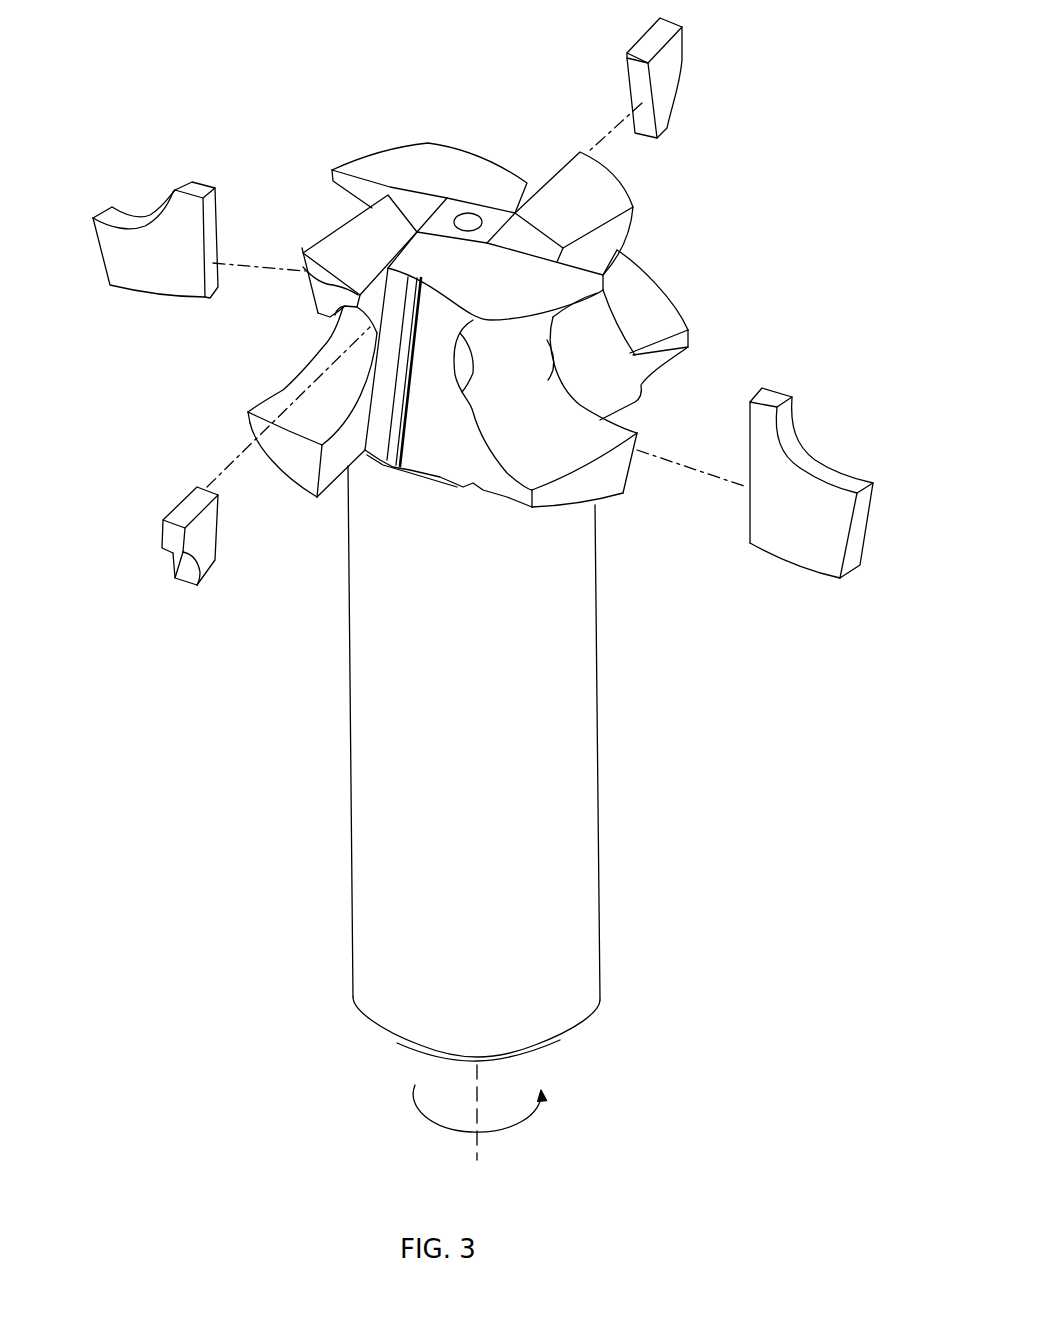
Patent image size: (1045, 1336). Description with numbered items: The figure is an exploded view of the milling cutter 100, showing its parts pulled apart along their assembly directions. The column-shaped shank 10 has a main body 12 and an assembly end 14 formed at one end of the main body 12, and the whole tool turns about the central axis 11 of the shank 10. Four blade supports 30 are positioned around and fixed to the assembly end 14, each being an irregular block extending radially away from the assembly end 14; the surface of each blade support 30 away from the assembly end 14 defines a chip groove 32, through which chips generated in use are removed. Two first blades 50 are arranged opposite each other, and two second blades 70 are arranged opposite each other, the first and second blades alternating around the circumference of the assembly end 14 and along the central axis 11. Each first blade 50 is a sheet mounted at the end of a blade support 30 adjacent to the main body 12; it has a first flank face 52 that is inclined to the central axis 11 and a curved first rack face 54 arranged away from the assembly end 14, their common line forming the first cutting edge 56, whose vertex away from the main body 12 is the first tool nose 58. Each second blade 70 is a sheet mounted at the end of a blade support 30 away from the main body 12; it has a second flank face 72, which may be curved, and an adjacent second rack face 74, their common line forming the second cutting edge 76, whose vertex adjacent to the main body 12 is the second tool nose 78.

The milling cutter 100 is at (479, 28).
The shank 10 is at (566, 1051).
The central axis 11 is at (479, 1124).
The main body 12 is at (565, 770).
The assembly end 14 is at (452, 212).
The blade support 30 is at (433, 157).
The chip groove 32 is at (640, 295).
The first blade 50 is at (203, 172).
The first flank face 52 is at (147, 273).
The first rack face 54 is at (140, 220).
The first cutting edge 56 is at (137, 232).
The first tool nose 58 is at (172, 192).
The second blade 70 is at (695, 35).
The second flank face 72 is at (205, 552).
The second rack face 74 is at (180, 570).
The second cutting edge 76 is at (195, 573).
The second tool nose 78 is at (190, 588).